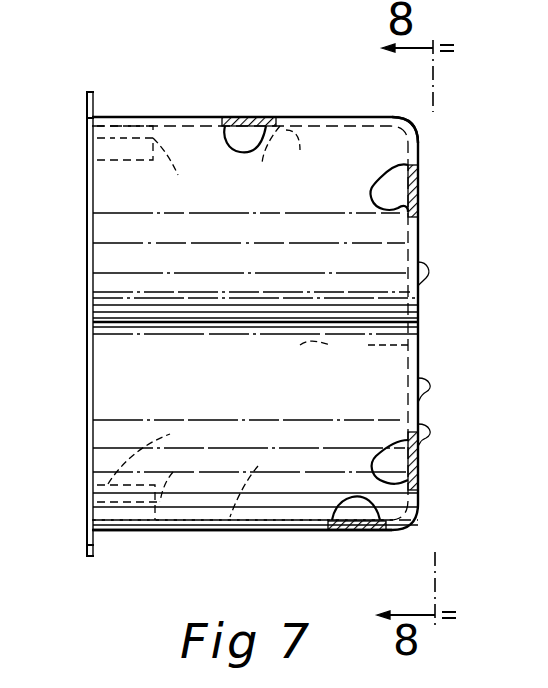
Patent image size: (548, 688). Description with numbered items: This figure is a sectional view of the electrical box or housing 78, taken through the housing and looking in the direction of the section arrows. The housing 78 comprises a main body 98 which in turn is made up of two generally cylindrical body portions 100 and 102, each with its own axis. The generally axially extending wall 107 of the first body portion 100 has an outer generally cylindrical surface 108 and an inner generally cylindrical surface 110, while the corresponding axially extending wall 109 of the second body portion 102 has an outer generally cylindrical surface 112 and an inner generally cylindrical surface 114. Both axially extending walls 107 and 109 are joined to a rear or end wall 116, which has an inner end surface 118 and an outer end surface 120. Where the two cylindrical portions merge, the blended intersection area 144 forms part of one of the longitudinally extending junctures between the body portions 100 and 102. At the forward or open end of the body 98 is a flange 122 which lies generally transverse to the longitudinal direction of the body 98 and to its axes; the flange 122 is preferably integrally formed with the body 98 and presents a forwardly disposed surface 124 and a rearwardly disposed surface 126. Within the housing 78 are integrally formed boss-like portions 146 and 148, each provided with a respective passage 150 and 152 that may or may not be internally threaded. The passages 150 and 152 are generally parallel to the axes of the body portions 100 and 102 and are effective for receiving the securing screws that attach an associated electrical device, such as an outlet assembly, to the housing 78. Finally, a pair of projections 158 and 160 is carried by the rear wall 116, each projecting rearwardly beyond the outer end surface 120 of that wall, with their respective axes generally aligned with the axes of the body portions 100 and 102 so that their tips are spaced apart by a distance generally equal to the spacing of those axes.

The electrical box or housing 78 is at (276, 68).
The main body 98 is at (127, 356).
The first cylindrical body portion 100 is at (306, 144).
The second cylindrical body portion 102 is at (284, 500).
The axially extending wall 107 is at (258, 117).
The outer cylindrical surface 108 is at (383, 117).
The axially extending wall 109 is at (360, 530).
The inner cylindrical surface 110 is at (290, 132).
The outer cylindrical surface 112 is at (262, 530).
The inner cylindrical surface 114 is at (270, 482).
The rear end wall 116 is at (395, 208).
The inner end surface 118 is at (354, 346).
The outer end surface 120 is at (418, 428).
The flange 122 is at (84, 546).
The forwardly disposed surface 124 is at (87, 93).
The rearwardly disposed surface 126 is at (94, 100).
The intersection area 144 is at (215, 322).
The boss-like portion 146 is at (125, 160).
The boss-like portion 148 is at (162, 470).
The passage 150 is at (190, 161).
The passage 152 is at (189, 475).
The projection 158 is at (418, 272).
The projection 160 is at (418, 385).